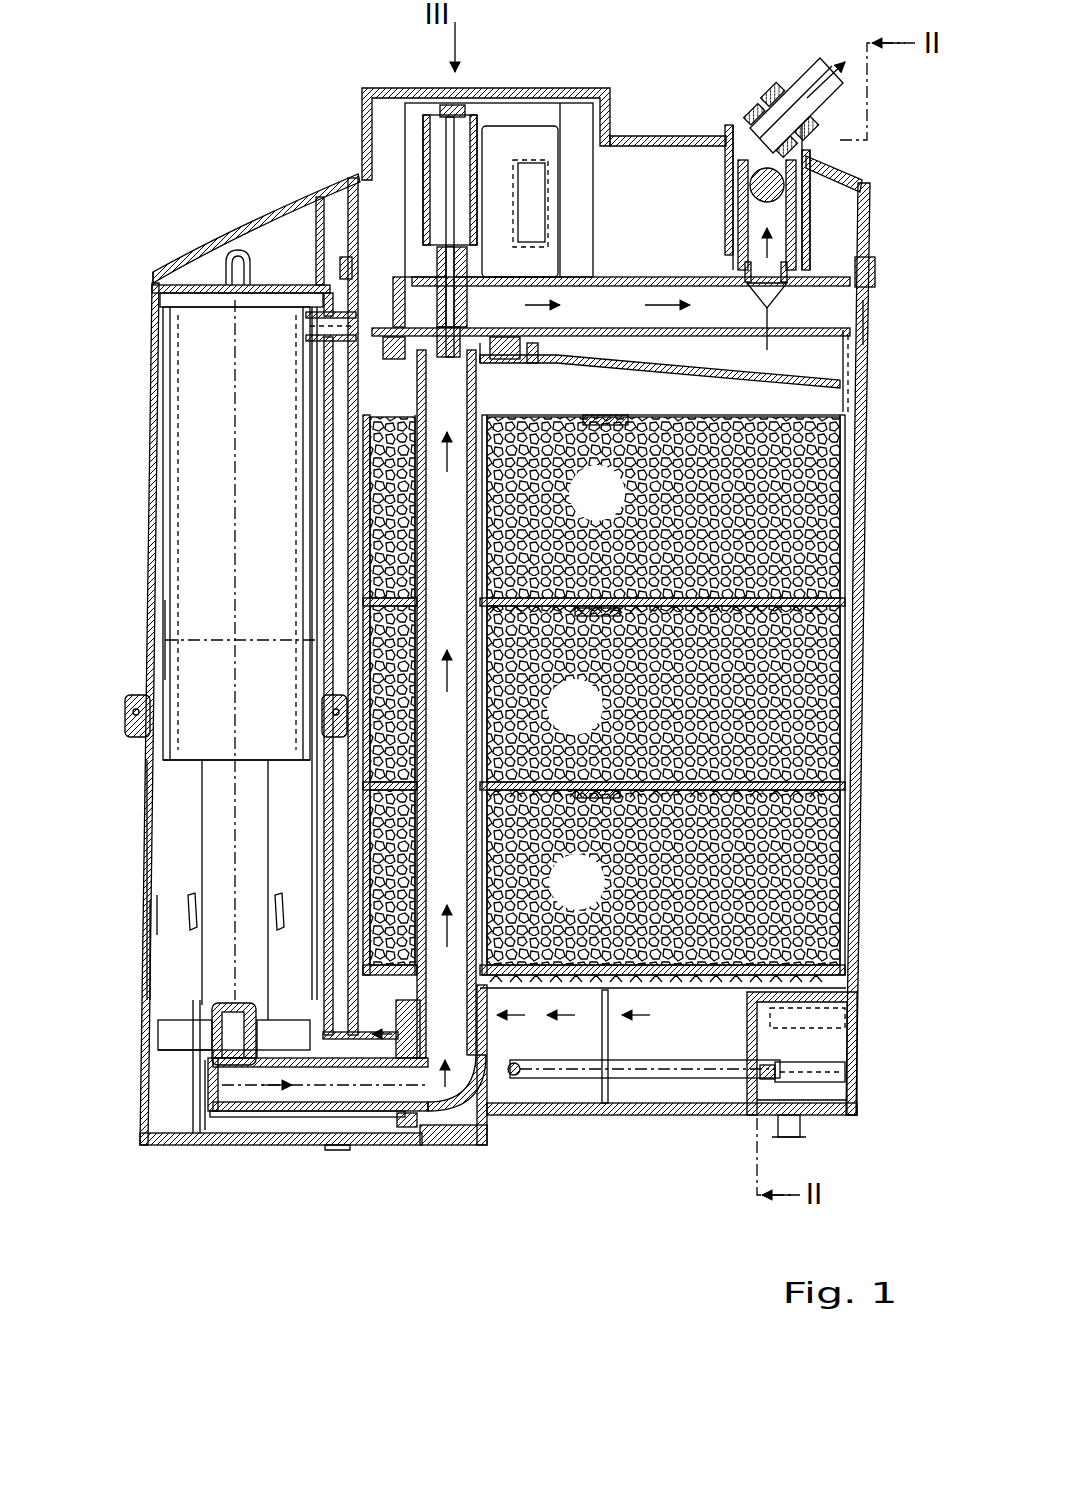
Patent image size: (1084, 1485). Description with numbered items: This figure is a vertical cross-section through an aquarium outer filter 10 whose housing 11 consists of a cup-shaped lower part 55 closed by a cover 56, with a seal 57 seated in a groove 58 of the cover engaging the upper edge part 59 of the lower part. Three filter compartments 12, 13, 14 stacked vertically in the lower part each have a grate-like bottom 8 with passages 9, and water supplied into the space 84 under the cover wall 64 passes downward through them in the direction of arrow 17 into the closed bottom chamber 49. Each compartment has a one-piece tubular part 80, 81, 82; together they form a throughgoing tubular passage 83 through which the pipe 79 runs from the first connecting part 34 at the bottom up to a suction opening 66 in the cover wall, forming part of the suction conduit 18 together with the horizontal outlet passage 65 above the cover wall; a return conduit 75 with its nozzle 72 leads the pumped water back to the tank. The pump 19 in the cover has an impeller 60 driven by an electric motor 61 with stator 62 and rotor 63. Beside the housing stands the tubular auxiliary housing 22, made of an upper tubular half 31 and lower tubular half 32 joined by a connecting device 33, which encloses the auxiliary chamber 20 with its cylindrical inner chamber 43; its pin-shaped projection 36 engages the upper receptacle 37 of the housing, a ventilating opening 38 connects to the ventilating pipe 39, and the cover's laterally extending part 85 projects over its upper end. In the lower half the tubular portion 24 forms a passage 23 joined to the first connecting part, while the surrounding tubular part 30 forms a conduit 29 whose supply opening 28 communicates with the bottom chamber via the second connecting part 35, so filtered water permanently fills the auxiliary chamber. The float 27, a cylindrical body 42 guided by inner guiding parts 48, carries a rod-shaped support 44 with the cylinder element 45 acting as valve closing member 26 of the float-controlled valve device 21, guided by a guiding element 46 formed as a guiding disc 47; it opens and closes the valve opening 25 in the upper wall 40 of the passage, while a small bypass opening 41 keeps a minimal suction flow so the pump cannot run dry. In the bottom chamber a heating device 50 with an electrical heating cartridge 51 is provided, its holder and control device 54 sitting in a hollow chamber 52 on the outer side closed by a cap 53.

The bottom 8 is at (790, 608).
The passages 9 is at (760, 606).
The filter 10 is at (868, 500).
The housing 11 is at (850, 600).
The filter compartment 12 is at (840, 468).
The filter compartment 13 is at (790, 695).
The filter compartment 14 is at (800, 870).
The arrow 17 is at (585, 999).
The suction conduit 18 is at (452, 1144).
The pump 19 is at (524, 140).
The auxiliary chamber 20 is at (180, 820).
The float-controlled valve device 21 is at (200, 1060).
The auxiliary housing 22 is at (133, 752).
The passage 23 is at (345, 1117).
The tubular portion 24 is at (305, 1097).
The valve opening 25 is at (195, 1087).
The valve closing member 26 is at (220, 1024).
The float 27 is at (205, 490).
The supply opening 28 is at (440, 1152).
The conduit 29 is at (415, 1142).
The tubular part 30 is at (382, 1130).
The upper tubular half 31 is at (152, 590).
The lower tubular half 32 is at (150, 967).
The connecting device 33 is at (125, 720).
The first connecting part 34 is at (470, 1117).
The second connecting part 35 is at (385, 1147).
The pin-shaped projection 36 is at (222, 242).
The upper receptacle 37 is at (210, 263).
The ventilating opening 38 is at (310, 322).
The ventilating pipe 39 is at (315, 285).
The wall 40 is at (262, 1077).
The bypass opening 41 is at (232, 1068).
The cylindrical body 42 is at (239, 599).
The cylindrical inner chamber 43 is at (155, 634).
The support 44 is at (220, 876).
The cylinder element 45 is at (180, 1052).
The guiding element 46 is at (185, 1042).
The guiding disc 47 is at (288, 1018).
The inner guiding parts 48 is at (235, 464).
The bottom chamber 49 is at (660, 1102).
The heating device 50 is at (710, 1092).
The electrical heating cartridge 51 is at (640, 1082).
The hollow chamber 52 is at (820, 1044).
The cap 53 is at (857, 1110).
The control device 54 is at (840, 1082).
The lower part 55 is at (858, 388).
The cover 56 is at (820, 225).
The seal 57 is at (870, 270).
The groove 58 is at (320, 278).
The upper edge part 59 is at (868, 302).
The impeller 60 is at (556, 200).
The electric motor 61 is at (493, 98).
The stator 62 is at (497, 143).
The rotor 63 is at (437, 183).
The cover wall 64 is at (630, 374).
The outlet passage 65 is at (590, 347).
The suction opening 66 is at (378, 247).
The nozzle 72 is at (795, 262).
The outlet fitting 75 is at (808, 225).
The pipe 79 is at (425, 390).
The tubular part 80 is at (500, 530).
The tubular part 81 is at (520, 730).
The tubular part 82 is at (520, 900).
The throughgoing tubular passage 83 is at (355, 597).
The space 84 is at (493, 402).
The laterally extending part 85 is at (190, 255).